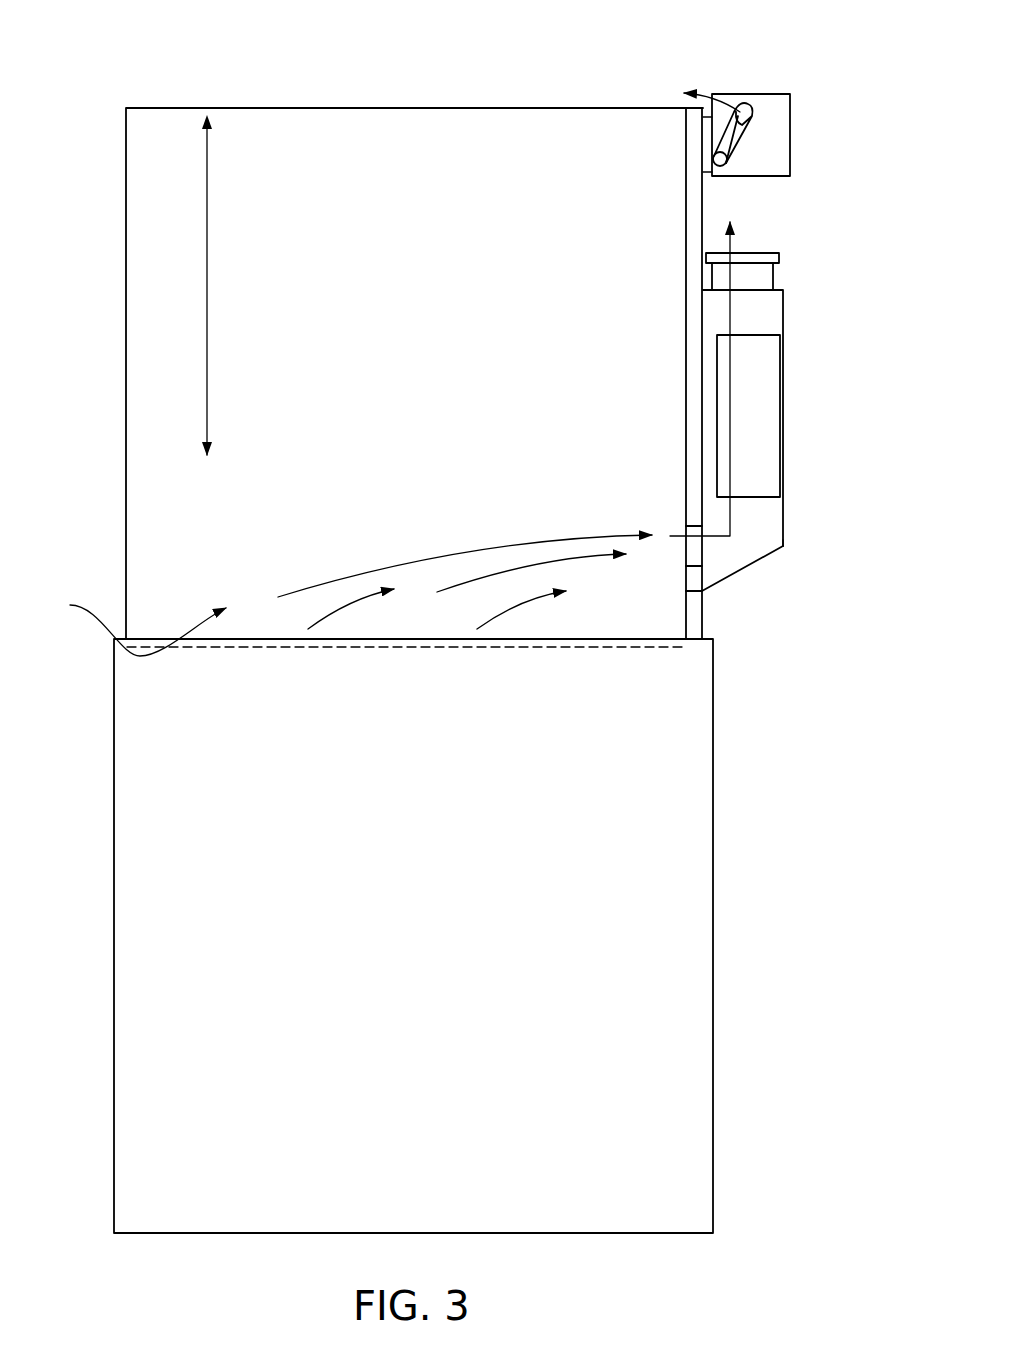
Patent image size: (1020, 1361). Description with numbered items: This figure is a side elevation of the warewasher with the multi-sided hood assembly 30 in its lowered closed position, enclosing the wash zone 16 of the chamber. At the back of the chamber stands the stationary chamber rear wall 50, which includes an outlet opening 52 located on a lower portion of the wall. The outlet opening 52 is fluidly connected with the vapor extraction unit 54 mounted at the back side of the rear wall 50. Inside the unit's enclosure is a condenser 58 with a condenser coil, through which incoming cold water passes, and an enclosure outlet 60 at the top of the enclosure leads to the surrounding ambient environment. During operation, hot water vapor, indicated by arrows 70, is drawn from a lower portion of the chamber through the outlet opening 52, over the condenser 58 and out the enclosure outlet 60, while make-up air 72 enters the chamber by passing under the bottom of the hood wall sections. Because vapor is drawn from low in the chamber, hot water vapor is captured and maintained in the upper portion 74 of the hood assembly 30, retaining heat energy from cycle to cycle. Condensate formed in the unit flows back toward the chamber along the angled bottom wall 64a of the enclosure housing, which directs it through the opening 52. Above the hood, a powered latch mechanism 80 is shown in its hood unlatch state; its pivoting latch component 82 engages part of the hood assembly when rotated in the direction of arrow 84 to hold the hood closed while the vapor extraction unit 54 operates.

The wash zone 16 is at (448, 337).
The multi-sided hood assembly 30 is at (386, 623).
The stationary chamber rear wall 50 is at (688, 425).
The outlet opening 52 is at (686, 566).
The vapor extraction unit 54 is at (789, 556).
The condenser 58 is at (770, 376).
The enclosure outlet 60 is at (757, 291).
The bottom wall of the enclosure housing 64a is at (770, 550).
The hot water vapor 70 is at (392, 563).
The make-up air 72 is at (370, 598).
The upper portion of the multi-sided hood assembly 74 is at (208, 290).
The powered latch mechanism 80 is at (774, 97).
The pivoting latch component 82 is at (742, 146).
The direction of rotation of the latch component 84 is at (700, 96).